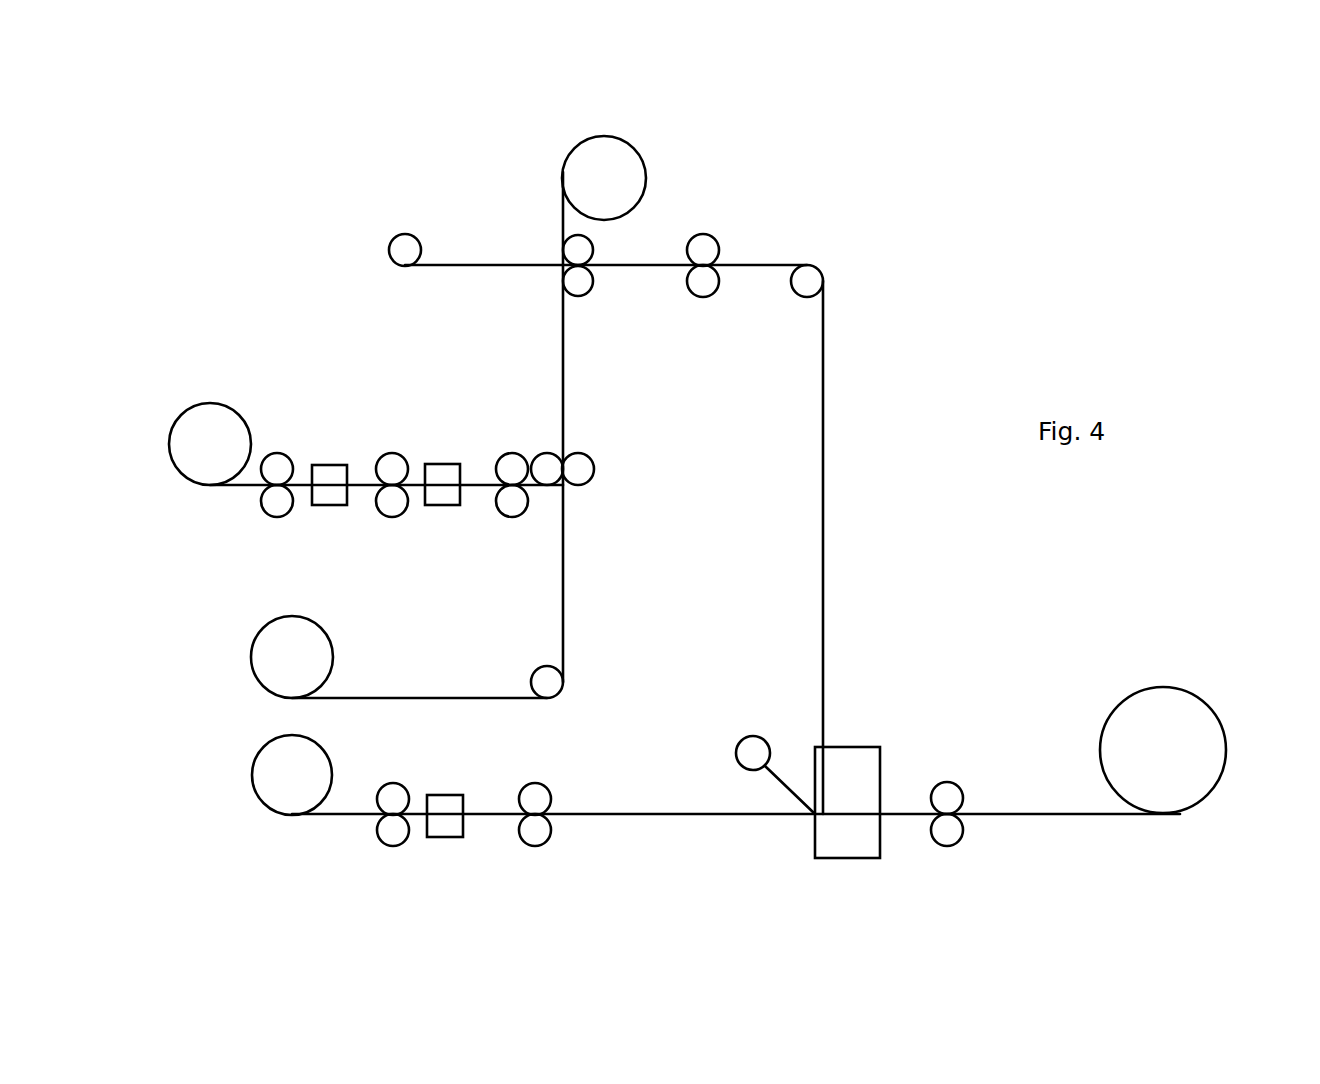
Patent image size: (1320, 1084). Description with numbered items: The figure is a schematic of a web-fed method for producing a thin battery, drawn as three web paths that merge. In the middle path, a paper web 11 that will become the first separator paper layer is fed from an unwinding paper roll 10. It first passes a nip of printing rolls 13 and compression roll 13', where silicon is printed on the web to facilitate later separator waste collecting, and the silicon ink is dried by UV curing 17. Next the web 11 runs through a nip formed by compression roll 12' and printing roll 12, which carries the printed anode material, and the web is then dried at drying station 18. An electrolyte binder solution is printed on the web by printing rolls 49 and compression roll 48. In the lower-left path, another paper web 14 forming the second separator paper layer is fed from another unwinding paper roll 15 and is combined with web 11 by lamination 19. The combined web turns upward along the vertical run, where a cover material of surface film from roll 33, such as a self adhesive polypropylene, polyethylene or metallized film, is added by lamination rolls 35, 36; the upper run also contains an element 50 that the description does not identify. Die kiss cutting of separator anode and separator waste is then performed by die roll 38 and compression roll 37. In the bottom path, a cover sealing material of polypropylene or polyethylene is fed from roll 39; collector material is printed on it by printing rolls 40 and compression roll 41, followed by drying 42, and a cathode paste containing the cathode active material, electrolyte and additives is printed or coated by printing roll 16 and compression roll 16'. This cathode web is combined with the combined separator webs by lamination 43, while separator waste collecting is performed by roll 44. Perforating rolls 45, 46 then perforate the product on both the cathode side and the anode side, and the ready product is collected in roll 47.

The unwinding paper roll 10 is at (195, 455).
The paper web 11 is at (243, 490).
The printing roll 12 is at (378, 429).
The compression roll 12' is at (421, 534).
The printing rolls 13 is at (275, 429).
The compression roll 13' is at (300, 515).
The paper web 14 is at (365, 697).
The unwinding paper roll 15 is at (300, 628).
The printing roll 16 is at (524, 778).
The compression roll 16' is at (524, 858).
The UV curing 17 is at (322, 472).
The drying 18 is at (438, 468).
The lamination 19 is at (565, 460).
The roll 33 is at (585, 142).
The lamination roll 35 is at (566, 242).
The lamination roll 36 is at (576, 297).
The compression roll 37 is at (703, 240).
The die roll 38 is at (705, 290).
The roll 39 is at (267, 797).
The printing rolls 40 is at (388, 790).
The compression roll 41 is at (382, 835).
The drying 42 is at (437, 828).
The lamination 43 is at (850, 780).
The roll 44 is at (748, 752).
The perforating roll 45 is at (958, 790).
The perforating roll 46 is at (958, 820).
The roll 47 is at (1222, 748).
The compression roll 48 is at (501, 460).
The printing rolls 49 is at (515, 505).
The guide roller 50 is at (398, 245).